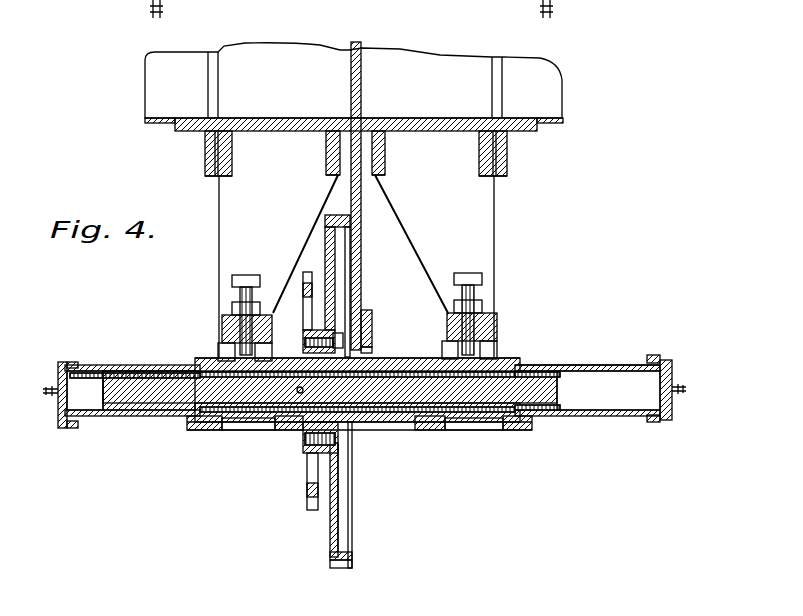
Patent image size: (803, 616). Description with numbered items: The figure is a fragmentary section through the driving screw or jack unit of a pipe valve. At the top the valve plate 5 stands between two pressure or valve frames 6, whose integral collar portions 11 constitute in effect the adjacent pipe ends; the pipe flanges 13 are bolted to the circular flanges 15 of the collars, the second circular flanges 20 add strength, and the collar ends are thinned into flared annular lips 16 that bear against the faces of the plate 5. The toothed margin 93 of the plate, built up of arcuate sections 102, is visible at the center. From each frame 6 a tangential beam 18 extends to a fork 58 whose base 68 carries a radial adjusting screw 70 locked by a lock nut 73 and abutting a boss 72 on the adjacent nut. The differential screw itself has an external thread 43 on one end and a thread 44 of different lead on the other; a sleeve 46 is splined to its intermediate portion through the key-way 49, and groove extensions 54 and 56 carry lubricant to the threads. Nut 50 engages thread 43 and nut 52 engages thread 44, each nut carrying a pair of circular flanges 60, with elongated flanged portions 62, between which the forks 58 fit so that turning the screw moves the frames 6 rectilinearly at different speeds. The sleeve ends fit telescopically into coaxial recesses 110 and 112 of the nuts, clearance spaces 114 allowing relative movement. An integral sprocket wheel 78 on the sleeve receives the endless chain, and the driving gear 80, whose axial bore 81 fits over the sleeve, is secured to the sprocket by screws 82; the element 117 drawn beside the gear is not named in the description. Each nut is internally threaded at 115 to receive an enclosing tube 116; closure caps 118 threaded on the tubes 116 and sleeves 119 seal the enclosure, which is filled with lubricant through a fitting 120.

The valve plate 5 is at (359, 43).
The valve frame 6 is at (221, 52).
The collar portion 11 is at (273, 120).
The pipe flange 13 is at (208, 177).
The circular flange 15 is at (232, 175).
The annular lip 16 is at (326, 148).
The tangential beam 18 is at (218, 245).
The second circular flange 20 is at (326, 168).
The external screw thread 43 is at (108, 417).
The external screw thread 44 is at (592, 360).
The sleeve 46 is at (378, 358).
The key-way 49 is at (362, 394).
The nut 50 is at (212, 431).
The nut 52 is at (475, 431).
The groove extension 54 is at (160, 411).
The groove extension 56 is at (557, 391).
The fork 58 is at (222, 350).
The circular flange 60 is at (195, 431).
The elongated flanged portion 62 is at (305, 455).
The fork base 68 is at (224, 321).
The adjusting screw 70 is at (232, 284).
The boss 72 is at (205, 360).
The lock nut 73 is at (265, 302).
The sprocket wheel 78 is at (316, 249).
The driving gear 80 is at (325, 221).
The axial bore 81 is at (300, 392).
The screw 82 is at (303, 300).
The toothed margin 93 is at (372, 344).
The arcuate section 102 is at (368, 310).
The coaxial recess 110 is at (288, 357).
The coaxial recess 112 is at (423, 356).
The clearance space 114 is at (250, 431).
The threaded end 115 is at (165, 368).
The enclosing tube 116 is at (128, 417).
The plate edge 117 is at (340, 478).
The closure cap 118 is at (60, 367).
The sleeve 119 is at (68, 429).
The lubricant fitting 120 is at (42, 391).